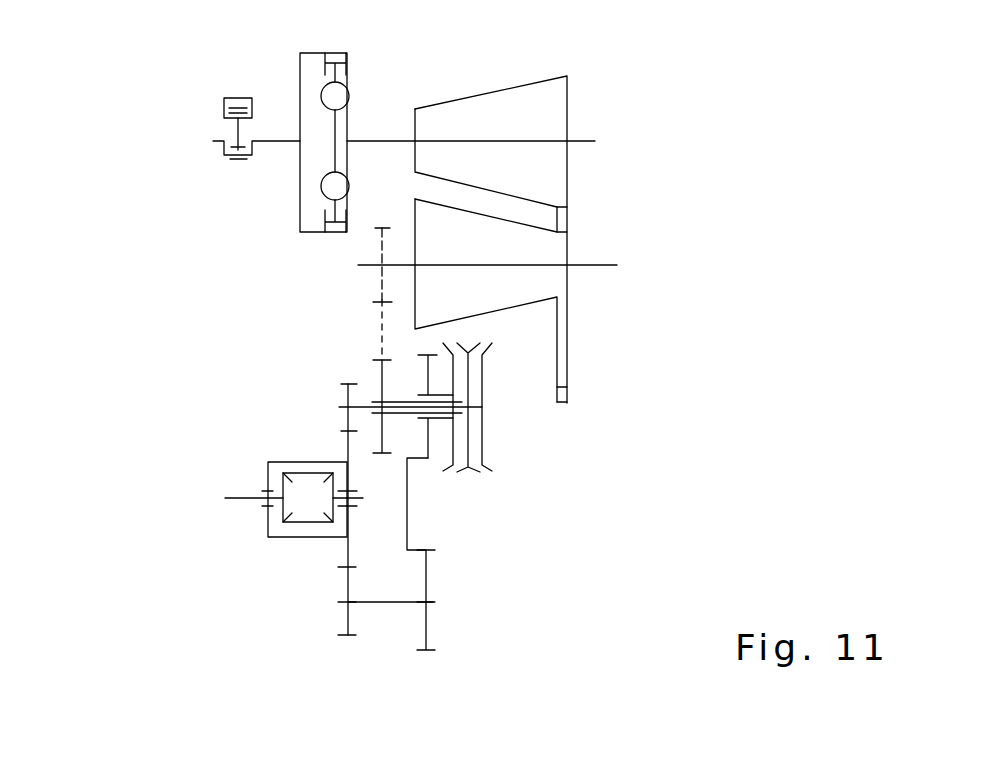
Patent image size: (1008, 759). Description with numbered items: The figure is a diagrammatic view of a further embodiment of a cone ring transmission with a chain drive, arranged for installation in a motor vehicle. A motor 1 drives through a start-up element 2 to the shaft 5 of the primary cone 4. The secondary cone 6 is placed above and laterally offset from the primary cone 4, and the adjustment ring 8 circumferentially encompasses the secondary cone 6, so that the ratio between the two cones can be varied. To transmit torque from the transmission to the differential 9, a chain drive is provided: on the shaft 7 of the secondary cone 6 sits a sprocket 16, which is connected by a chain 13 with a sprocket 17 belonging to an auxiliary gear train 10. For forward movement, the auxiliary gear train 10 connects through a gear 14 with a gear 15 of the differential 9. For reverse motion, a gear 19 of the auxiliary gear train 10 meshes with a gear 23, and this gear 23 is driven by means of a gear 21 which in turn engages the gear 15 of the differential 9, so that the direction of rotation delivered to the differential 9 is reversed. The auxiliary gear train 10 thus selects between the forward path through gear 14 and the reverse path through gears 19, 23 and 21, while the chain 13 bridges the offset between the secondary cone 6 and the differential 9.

The motor 1 is at (238, 97).
The start-up element 2 is at (315, 52).
The primary cone 4 is at (507, 88).
The shaft 5 is at (580, 142).
The secondary cone 6 is at (512, 310).
The shaft 7 is at (583, 265).
The adjustment ring 8 is at (567, 395).
The differential 9 is at (290, 537).
The auxiliary gear train 10 is at (482, 423).
The chain 13 is at (375, 339).
The gear 14 is at (345, 422).
The gear 15 is at (348, 444).
The sprocket for chain 16 is at (379, 288).
The sprocket for chain 17 is at (382, 380).
The gear 19 is at (428, 445).
The sprocket for chain 21 is at (347, 622).
The gear 23 is at (426, 620).